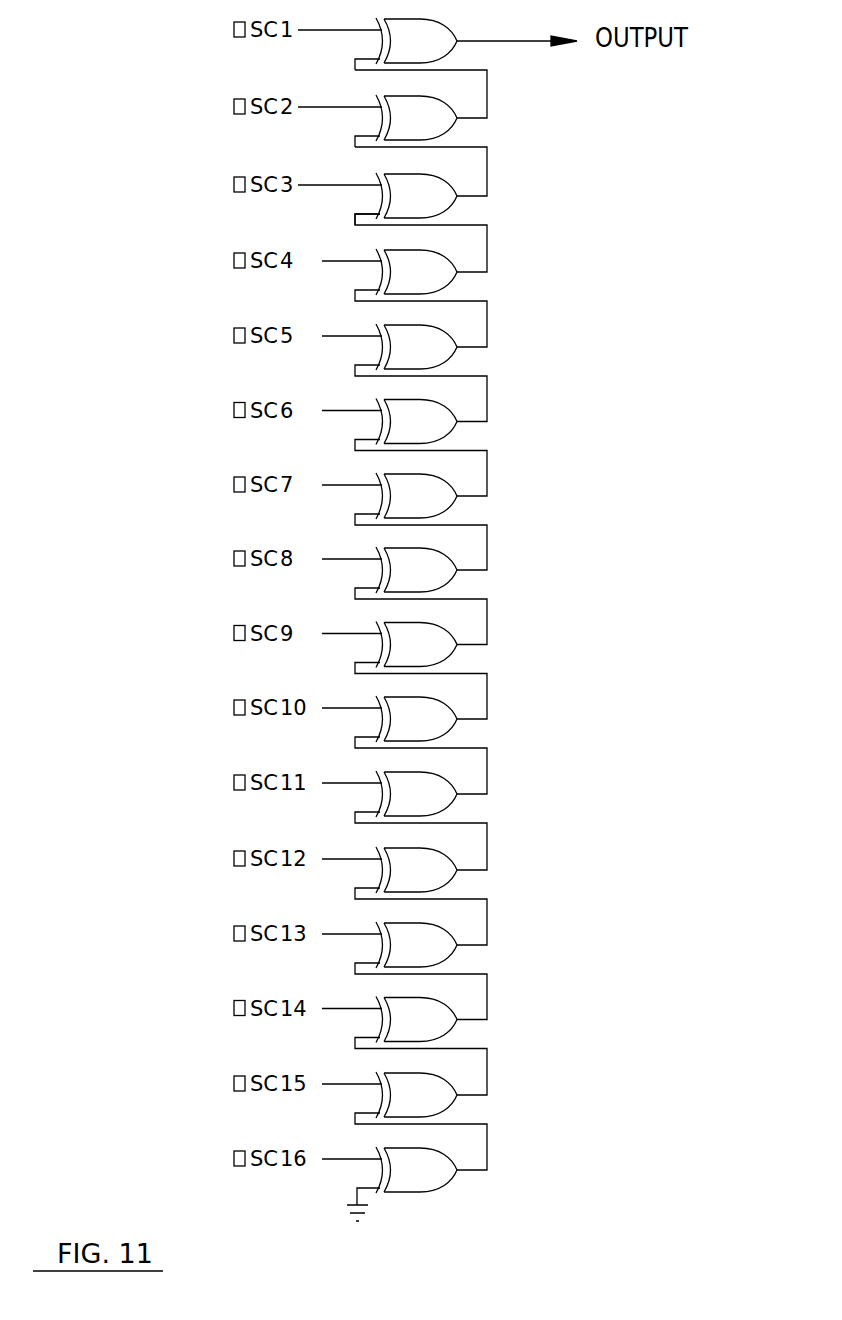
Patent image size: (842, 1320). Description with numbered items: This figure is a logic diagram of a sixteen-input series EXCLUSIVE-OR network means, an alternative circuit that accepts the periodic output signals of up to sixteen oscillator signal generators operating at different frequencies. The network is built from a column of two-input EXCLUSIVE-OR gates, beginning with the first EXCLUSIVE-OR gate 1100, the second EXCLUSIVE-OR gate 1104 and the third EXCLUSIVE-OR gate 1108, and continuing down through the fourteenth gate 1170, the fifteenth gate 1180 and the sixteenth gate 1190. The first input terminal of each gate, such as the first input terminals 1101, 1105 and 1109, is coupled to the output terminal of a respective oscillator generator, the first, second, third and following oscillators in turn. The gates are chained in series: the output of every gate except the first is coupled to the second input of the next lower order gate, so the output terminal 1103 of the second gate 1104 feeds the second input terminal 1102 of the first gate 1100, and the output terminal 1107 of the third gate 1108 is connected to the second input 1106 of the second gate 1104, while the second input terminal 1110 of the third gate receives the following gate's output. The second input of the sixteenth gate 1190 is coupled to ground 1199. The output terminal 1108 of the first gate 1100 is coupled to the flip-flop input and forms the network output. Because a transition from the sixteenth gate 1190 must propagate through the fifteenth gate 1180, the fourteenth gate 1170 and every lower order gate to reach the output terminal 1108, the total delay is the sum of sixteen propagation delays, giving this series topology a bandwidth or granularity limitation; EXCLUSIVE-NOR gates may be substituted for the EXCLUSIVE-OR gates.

The first EXCLUSIVE-OR gate 1100 is at (416, 41).
The first input terminal of first EXCLUSIVE-OR gate 1101 is at (340, 15).
The second input terminal of first EXCLUSIVE-OR gate 1102 is at (346, 51).
The output terminal of second EXCLUSIVE-OR gate 1103 is at (487, 108).
The second EXCLUSIVE-OR gate 1104 is at (416, 118).
The first input terminal of second EXCLUSIVE-OR gate 1105 is at (340, 93).
The second input terminal of second EXCLUSIVE-OR gate 1106 is at (346, 129).
The output terminal of third EXCLUSIVE-OR gate 1107 is at (487, 181).
The third EXCLUSIVE-OR gate / output terminal 1108 is at (513, 15).
The first input terminal of third EXCLUSIVE-OR gate 1109 is at (340, 170).
The second input terminal of third EXCLUSIVE-OR gate 1110 is at (346, 206).
The fourteenth EXCLUSIVE-OR gate 1170 is at (404, 1003).
The fifteenth EXCLUSIVE-OR gate 1180 is at (404, 1078).
The sixteenth EXCLUSIVE-OR gate 1190 is at (404, 1153).
The ground 1199 is at (357, 1191).